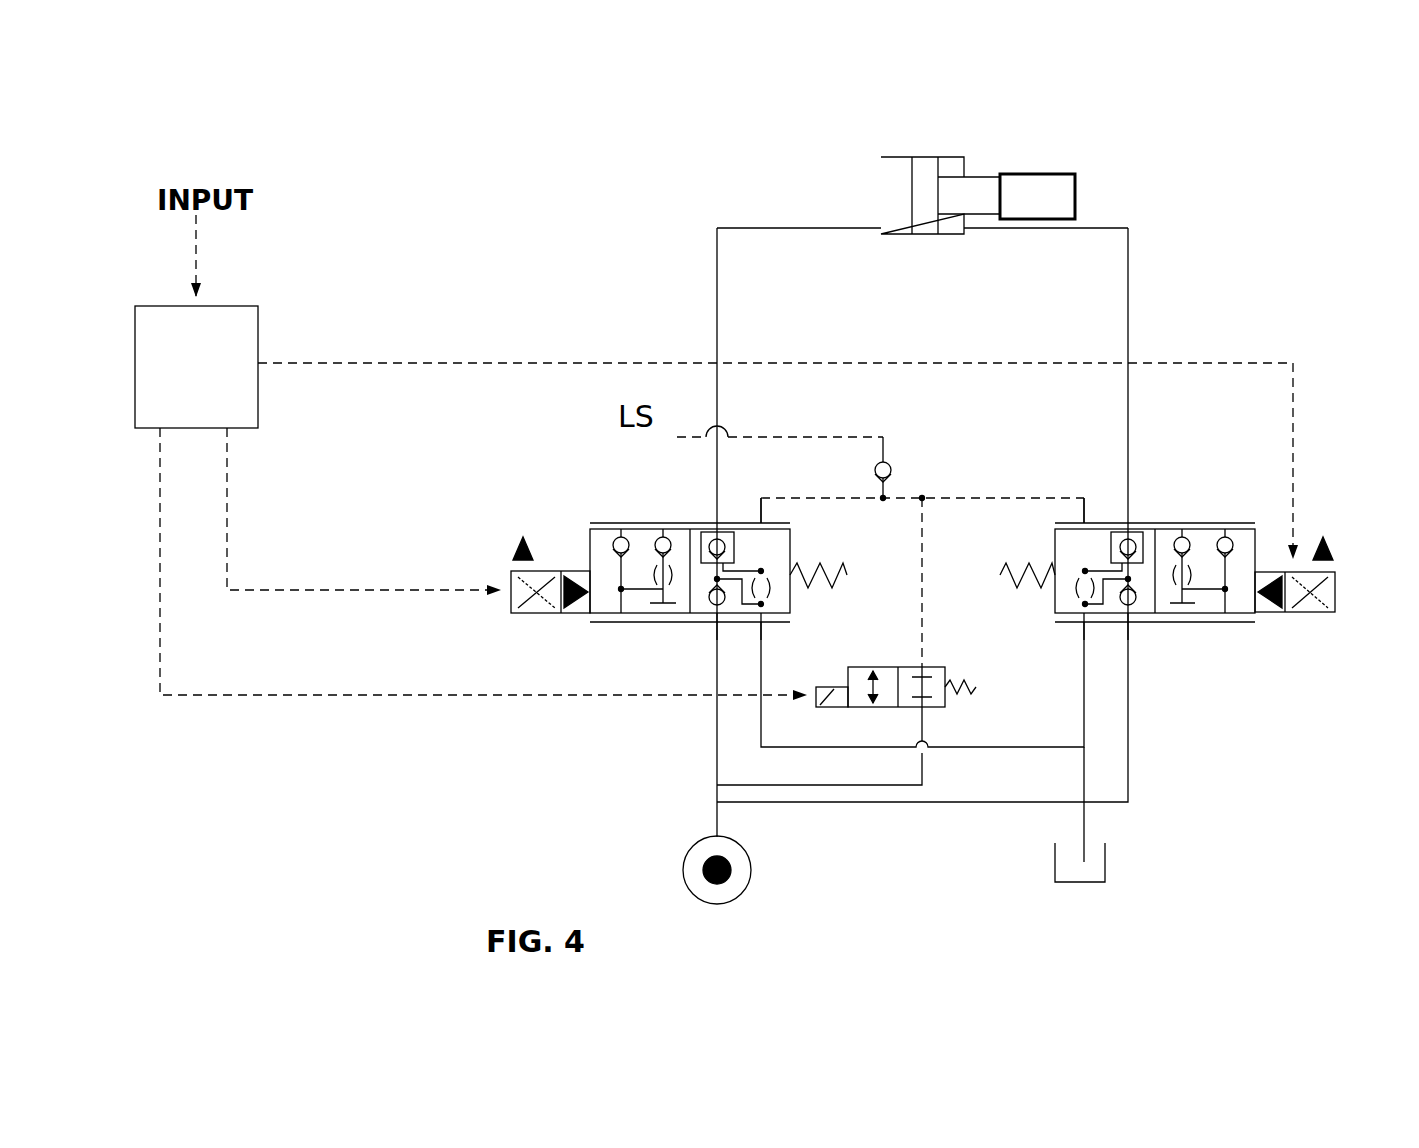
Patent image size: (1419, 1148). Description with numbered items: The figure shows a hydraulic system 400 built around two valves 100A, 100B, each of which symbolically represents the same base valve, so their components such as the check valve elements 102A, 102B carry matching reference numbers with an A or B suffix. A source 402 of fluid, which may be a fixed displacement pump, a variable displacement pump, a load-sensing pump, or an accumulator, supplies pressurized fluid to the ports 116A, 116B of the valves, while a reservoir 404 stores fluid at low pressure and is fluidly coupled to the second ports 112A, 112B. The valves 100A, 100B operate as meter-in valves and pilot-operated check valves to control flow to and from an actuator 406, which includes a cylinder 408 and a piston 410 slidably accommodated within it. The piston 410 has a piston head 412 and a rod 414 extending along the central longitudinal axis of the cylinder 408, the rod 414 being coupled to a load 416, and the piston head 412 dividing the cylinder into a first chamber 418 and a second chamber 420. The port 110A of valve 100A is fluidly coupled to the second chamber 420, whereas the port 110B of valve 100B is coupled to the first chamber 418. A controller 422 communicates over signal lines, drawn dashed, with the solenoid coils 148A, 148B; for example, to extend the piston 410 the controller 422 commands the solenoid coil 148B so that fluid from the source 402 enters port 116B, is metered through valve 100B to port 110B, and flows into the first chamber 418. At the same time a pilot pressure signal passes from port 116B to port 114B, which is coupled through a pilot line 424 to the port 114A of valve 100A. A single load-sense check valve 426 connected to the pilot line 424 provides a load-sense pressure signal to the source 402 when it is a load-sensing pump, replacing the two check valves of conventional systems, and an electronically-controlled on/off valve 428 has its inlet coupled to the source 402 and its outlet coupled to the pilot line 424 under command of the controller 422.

The hydraulic system 400 is at (430, 168).
The source of fluid 402 is at (751, 866).
The reservoir 404 is at (1105, 866).
The actuator 406 is at (896, 141).
The cylinder 408 is at (893, 157).
The piston 410 is at (898, 175).
The piston head 412 is at (922, 168).
The rod 414 is at (987, 178).
The load 416 is at (1063, 163).
The first chamber 418 is at (872, 207).
The second chamber 420 is at (955, 155).
The controller 422 is at (196, 367).
The pilot line 424 is at (965, 490).
The load-sense check valve 426 is at (897, 452).
The electronically-controlled valve 428 is at (896, 656).
The valve 100A is at (1174, 569).
The valve 100B is at (623, 570).
The valve component 102A is at (1152, 544).
The valve component 102B is at (706, 515).
The port 110A is at (1174, 473).
The port 110B is at (652, 512).
The second port 112A is at (1076, 632).
The second port 112B is at (770, 632).
The port 114A is at (1088, 512).
The port 114B is at (748, 514).
The port 116A is at (1131, 632).
The port 116B is at (700, 630).
The solenoid coil 148A is at (1312, 622).
The solenoid coil 148B is at (500, 566).